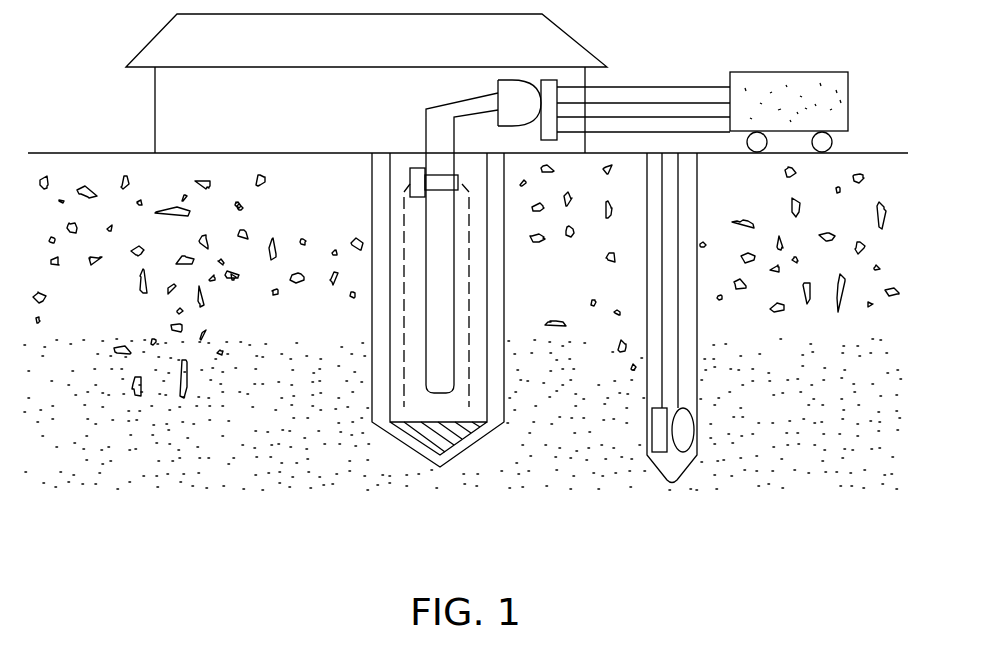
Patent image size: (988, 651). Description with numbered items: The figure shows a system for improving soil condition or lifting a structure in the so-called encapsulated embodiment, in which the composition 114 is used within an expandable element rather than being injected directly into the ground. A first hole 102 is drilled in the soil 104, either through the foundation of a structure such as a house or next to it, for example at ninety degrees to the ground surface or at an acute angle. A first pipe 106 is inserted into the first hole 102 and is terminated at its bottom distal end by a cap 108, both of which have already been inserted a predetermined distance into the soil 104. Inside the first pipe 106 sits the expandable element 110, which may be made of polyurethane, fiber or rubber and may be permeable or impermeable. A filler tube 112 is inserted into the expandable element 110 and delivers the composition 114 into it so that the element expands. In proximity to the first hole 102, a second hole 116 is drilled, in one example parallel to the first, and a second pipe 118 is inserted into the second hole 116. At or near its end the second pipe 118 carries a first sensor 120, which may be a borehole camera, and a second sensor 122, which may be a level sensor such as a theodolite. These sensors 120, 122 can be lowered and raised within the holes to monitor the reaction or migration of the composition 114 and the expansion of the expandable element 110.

The first hole 102 is at (372, 176).
The soil 104 is at (80, 350).
The first pipe 106 is at (390, 360).
The cap 108 is at (455, 445).
The expandable element 110 is at (404, 305).
The filler tube 112 is at (455, 312).
The composition 114 is at (790, 72).
The second hole 116 is at (697, 170).
The second pipe 118 is at (678, 330).
The first sensor 120 is at (652, 432).
The second sensor 122 is at (695, 437).